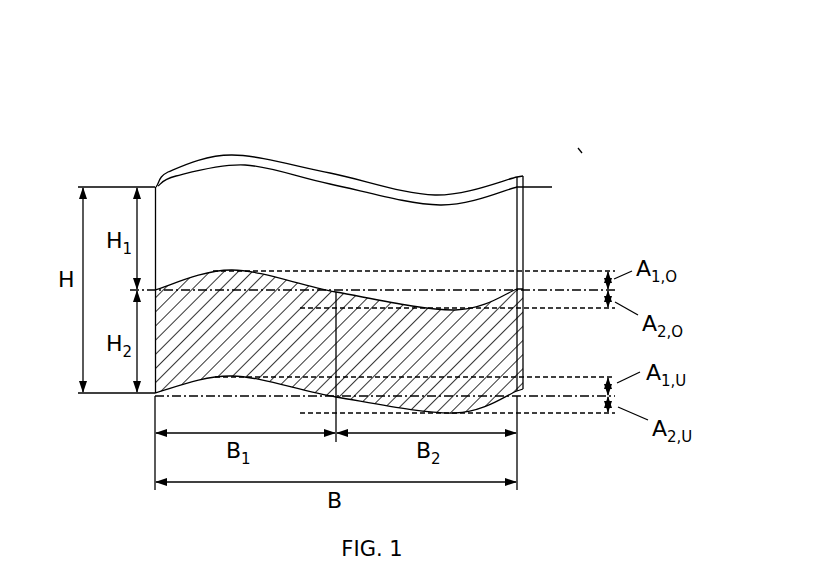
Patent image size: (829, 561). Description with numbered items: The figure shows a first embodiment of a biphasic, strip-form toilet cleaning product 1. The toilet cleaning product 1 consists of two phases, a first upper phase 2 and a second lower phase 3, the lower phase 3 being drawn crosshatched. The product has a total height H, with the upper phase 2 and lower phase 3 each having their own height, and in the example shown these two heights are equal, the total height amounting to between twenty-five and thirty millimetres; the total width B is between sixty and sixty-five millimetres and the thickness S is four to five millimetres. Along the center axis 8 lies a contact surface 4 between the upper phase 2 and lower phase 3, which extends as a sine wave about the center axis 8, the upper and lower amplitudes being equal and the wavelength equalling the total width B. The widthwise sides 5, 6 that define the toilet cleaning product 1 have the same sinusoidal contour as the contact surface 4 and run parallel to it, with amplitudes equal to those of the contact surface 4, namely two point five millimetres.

The toilet cleaning product 1 is at (384, 105).
The first upper phase 2 is at (213, 203).
The second lower phase 3 is at (155, 393).
The contact surface 4 is at (238, 270).
The widthwise side 5 is at (420, 200).
The widthwise side 6 is at (515, 412).
The center axis 8 is at (477, 283).